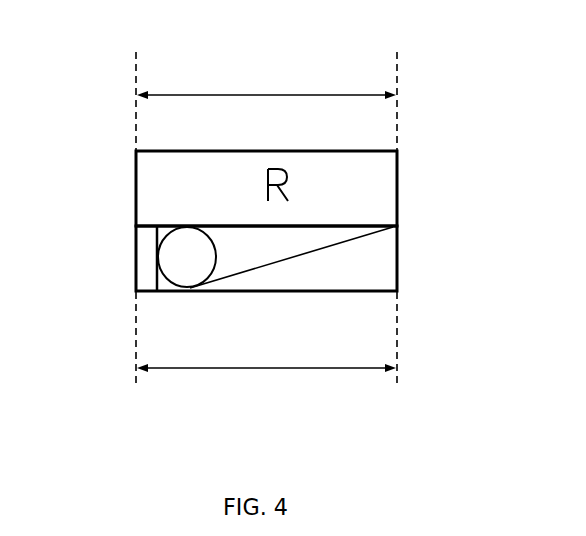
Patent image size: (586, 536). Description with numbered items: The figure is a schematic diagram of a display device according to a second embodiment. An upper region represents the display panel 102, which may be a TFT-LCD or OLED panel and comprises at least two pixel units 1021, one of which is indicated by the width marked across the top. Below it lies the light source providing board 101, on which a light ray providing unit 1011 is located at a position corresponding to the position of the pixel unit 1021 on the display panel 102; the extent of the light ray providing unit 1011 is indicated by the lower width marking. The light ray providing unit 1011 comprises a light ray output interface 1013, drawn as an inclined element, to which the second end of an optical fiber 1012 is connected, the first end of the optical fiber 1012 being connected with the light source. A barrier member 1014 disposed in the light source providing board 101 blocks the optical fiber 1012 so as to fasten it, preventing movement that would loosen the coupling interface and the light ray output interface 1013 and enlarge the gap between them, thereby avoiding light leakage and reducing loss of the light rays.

The light source providing board 101 is at (408, 226).
The display panel 102 is at (408, 153).
The light ray providing unit 1011 is at (247, 368).
The optical fiber 1012 is at (187, 288).
The light ray output interface 1013 is at (283, 262).
The barrier member 1014 is at (157, 282).
The pixel unit 1021 is at (252, 94).